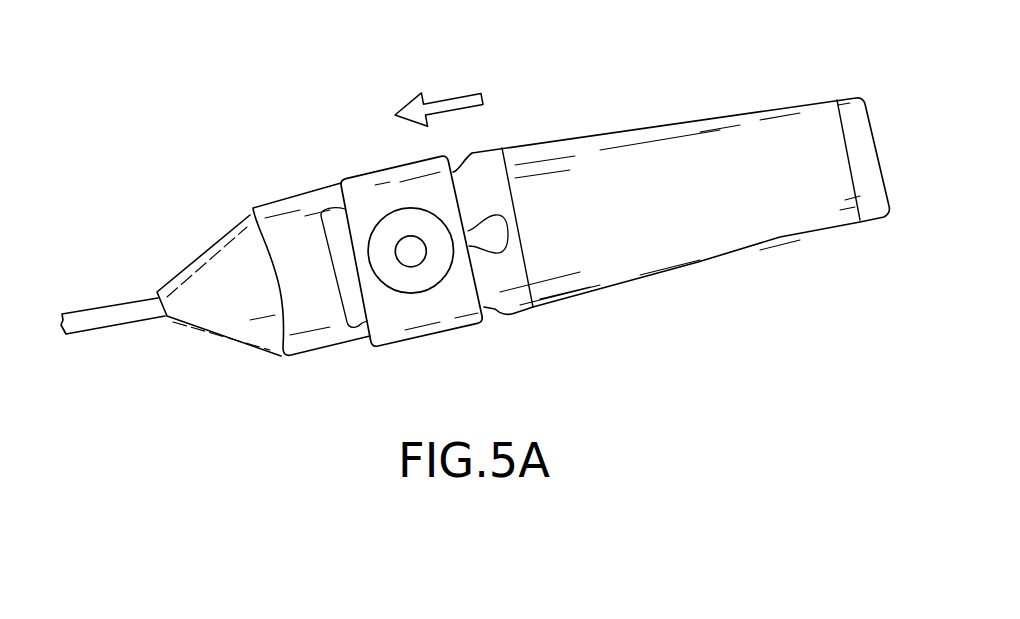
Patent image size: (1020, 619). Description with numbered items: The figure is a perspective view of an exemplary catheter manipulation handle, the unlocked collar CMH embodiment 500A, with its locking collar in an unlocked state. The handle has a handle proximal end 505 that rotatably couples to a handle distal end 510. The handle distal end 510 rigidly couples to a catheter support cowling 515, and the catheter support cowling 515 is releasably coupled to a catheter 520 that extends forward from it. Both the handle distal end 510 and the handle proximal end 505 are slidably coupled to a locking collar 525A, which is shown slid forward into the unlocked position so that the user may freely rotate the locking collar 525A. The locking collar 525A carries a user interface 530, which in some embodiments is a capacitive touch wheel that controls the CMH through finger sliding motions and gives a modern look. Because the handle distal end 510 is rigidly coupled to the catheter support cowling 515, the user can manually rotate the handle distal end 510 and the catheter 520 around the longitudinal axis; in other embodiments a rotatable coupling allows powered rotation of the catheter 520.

The unlocked collar CMH embodiment 500A is at (374, 86).
The handle proximal end 505 is at (698, 263).
The handle distal end 510 is at (300, 193).
The catheter support cowling 515 is at (203, 252).
The catheter 520 is at (112, 303).
The locking collar 525A is at (445, 338).
The user interface 530 is at (410, 293).